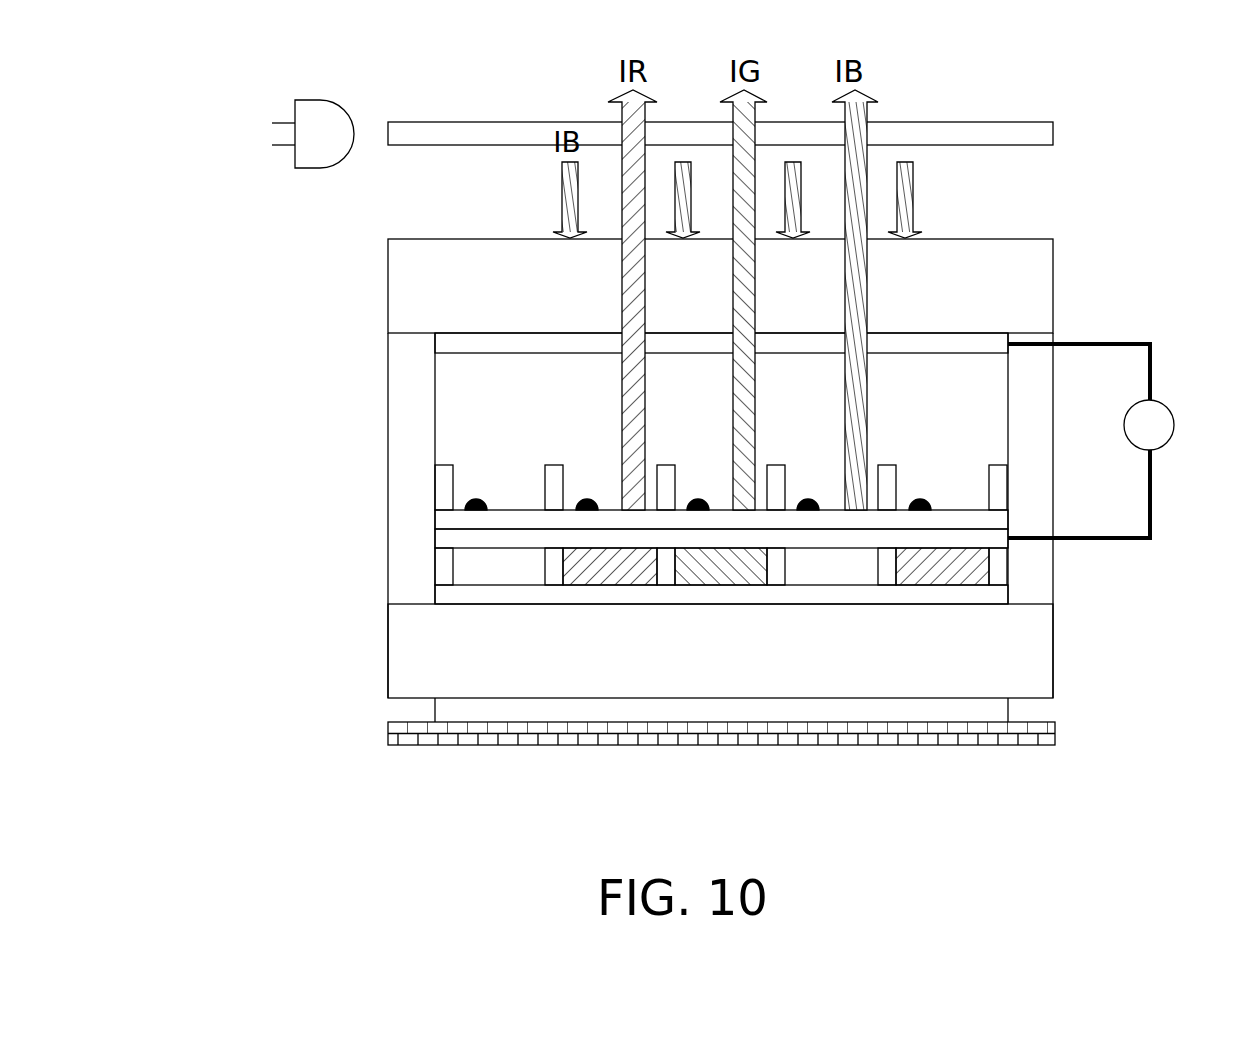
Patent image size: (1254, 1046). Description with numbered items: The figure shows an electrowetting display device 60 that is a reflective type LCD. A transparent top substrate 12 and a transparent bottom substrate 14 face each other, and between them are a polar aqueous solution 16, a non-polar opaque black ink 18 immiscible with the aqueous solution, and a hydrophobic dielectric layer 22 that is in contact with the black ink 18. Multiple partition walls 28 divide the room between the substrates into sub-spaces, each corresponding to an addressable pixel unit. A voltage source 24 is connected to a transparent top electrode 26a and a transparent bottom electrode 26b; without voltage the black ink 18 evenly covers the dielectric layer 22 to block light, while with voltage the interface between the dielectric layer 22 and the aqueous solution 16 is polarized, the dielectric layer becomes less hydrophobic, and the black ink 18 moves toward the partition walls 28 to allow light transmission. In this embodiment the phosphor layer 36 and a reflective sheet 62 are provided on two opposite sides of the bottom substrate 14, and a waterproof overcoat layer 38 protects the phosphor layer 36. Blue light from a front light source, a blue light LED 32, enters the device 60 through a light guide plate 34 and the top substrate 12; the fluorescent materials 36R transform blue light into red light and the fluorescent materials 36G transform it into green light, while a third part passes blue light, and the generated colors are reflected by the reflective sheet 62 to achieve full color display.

The electrowetting display device 60 is at (117, 109).
The blue light LED 32 is at (320, 113).
The light guide plate 34 is at (497, 122).
The top substrate 12 is at (400, 297).
The top electrode 26a is at (445, 342).
The aqueous solution 16 is at (450, 430).
The partition walls 28 is at (438, 492).
The black ink 18 is at (485, 505).
The hydrophobic dielectric layer 22 is at (443, 517).
The bottom electrode 26b is at (443, 540).
The phosphor layer 36 is at (724, 618).
The fluorescent materials 36R is at (597, 567).
The fluorescent materials 36G is at (727, 568).
The overcoat layer 38 is at (443, 593).
The bottom substrate 14 is at (413, 662).
The reflective sheet 62 is at (1056, 730).
The voltage source 24 is at (1159, 398).